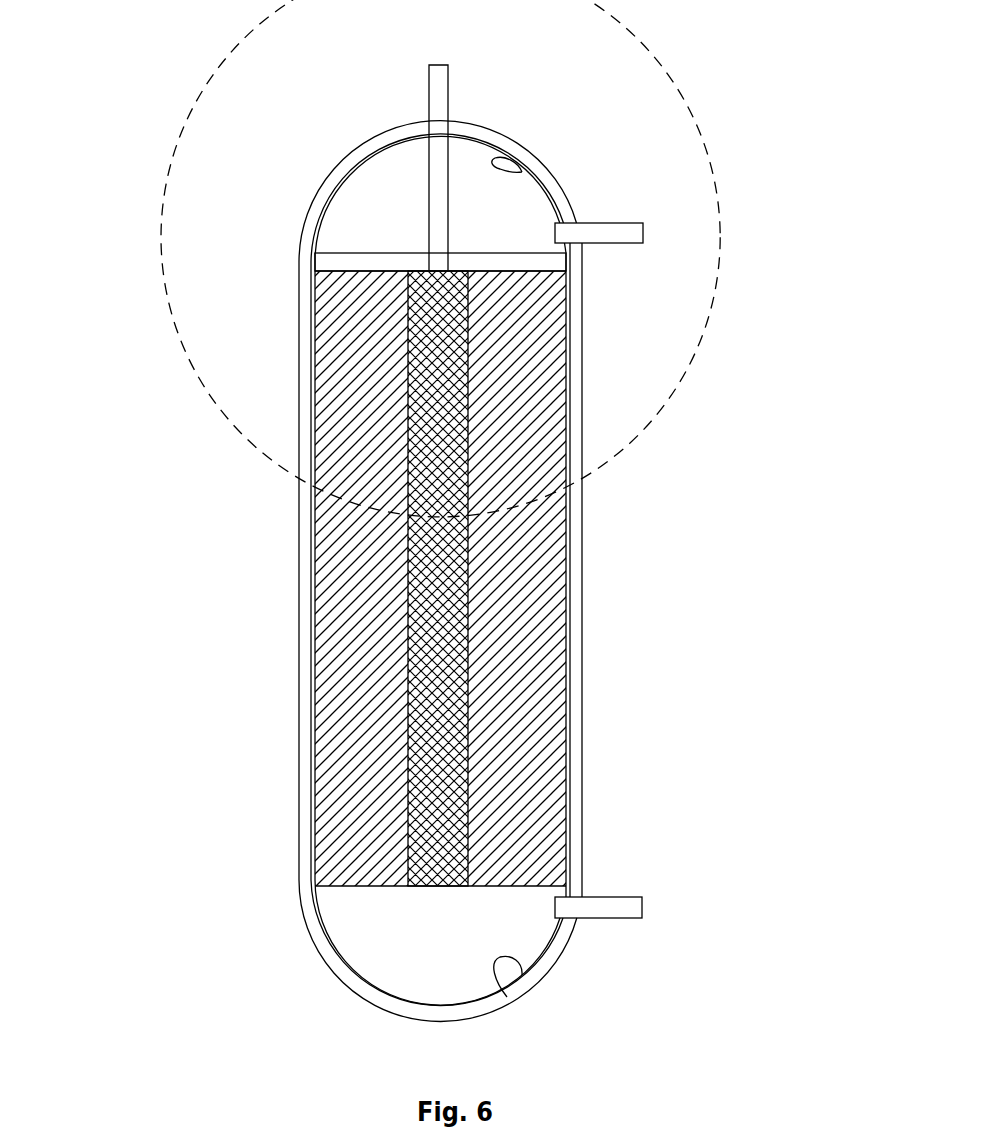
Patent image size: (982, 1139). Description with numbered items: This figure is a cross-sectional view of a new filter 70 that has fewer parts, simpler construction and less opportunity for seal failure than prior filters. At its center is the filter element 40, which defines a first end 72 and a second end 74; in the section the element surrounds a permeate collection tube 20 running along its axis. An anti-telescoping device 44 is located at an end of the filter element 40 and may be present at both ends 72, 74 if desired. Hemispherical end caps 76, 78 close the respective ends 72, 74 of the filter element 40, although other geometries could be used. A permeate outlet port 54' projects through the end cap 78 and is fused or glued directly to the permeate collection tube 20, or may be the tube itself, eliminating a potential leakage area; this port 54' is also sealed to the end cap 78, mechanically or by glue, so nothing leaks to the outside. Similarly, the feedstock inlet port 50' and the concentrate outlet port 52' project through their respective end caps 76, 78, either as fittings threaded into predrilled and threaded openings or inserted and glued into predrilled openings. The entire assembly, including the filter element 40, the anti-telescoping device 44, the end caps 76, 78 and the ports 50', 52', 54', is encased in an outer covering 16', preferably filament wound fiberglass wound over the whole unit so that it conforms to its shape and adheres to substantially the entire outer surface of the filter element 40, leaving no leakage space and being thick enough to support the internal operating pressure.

The filter 70 is at (176, 493).
The outer covering 16' is at (362, 571).
The anti-telescoping device 44 is at (367, 253).
The permeate outlet port 54' is at (265, 138).
The end cap 78 is at (523, 173).
The concentrate outlet port 52' is at (686, 173).
The feedstock inlet port 50' is at (675, 937).
The filter element 40 is at (517, 632).
The permeate collection tube 20 is at (445, 553).
The second end 74 is at (507, 275).
The first end 72 is at (512, 884).
The end cap 76 is at (507, 997).